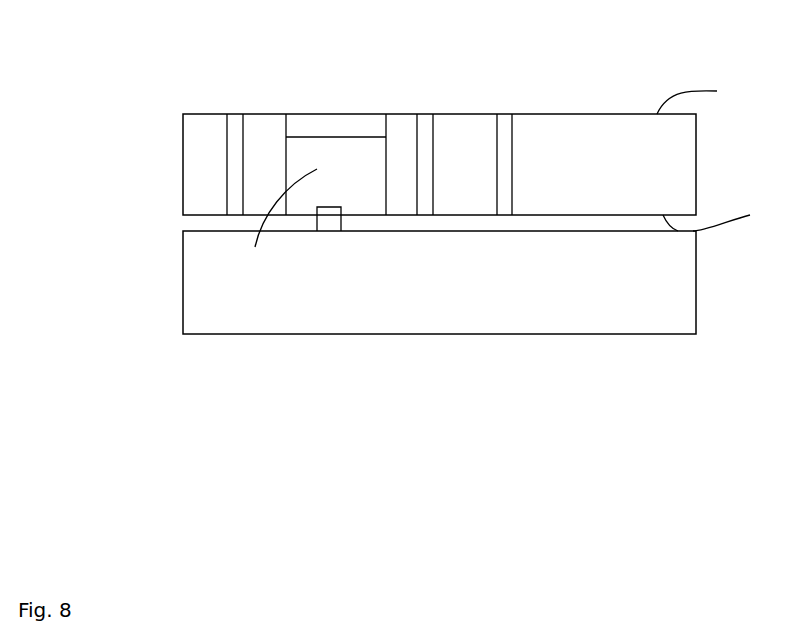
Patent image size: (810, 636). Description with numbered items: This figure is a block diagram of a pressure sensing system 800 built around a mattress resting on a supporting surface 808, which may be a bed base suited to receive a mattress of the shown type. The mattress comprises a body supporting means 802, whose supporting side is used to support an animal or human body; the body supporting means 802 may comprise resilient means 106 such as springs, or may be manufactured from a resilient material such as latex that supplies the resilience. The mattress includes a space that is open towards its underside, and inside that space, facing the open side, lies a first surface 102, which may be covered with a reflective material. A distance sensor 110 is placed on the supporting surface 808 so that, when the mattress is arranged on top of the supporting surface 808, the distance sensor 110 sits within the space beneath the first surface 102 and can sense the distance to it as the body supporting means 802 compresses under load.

The semiconductor package assembly 800 is at (800, 42).
The body supporting means 802 is at (208, 177).
The resilient means 106 is at (237, 137).
The first surface 102 is at (317, 128).
The distance sensor 110 is at (332, 223).
The supporting surface 808 is at (672, 287).